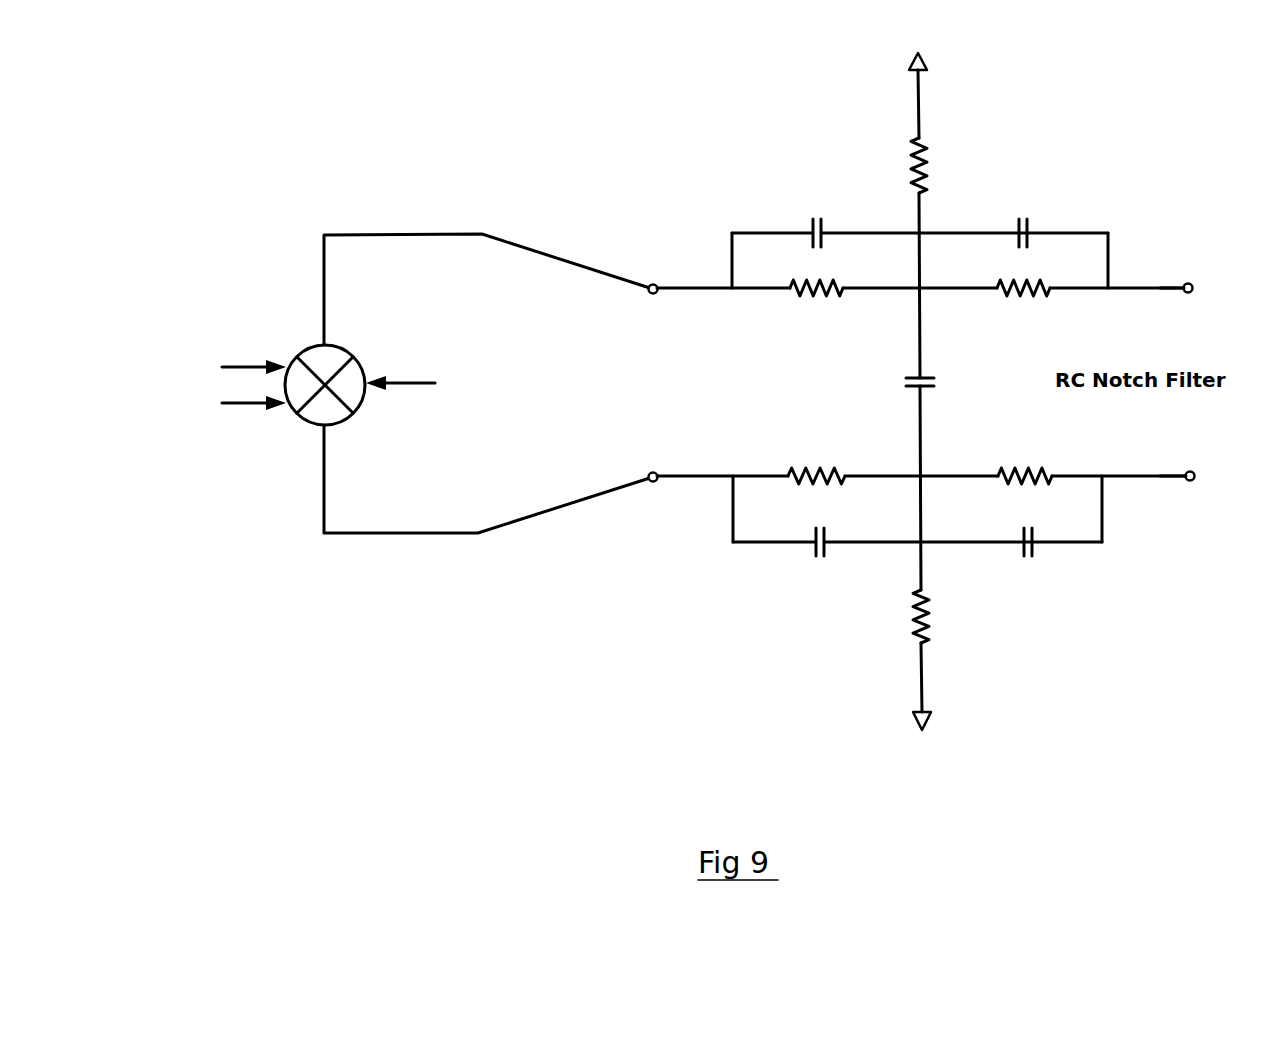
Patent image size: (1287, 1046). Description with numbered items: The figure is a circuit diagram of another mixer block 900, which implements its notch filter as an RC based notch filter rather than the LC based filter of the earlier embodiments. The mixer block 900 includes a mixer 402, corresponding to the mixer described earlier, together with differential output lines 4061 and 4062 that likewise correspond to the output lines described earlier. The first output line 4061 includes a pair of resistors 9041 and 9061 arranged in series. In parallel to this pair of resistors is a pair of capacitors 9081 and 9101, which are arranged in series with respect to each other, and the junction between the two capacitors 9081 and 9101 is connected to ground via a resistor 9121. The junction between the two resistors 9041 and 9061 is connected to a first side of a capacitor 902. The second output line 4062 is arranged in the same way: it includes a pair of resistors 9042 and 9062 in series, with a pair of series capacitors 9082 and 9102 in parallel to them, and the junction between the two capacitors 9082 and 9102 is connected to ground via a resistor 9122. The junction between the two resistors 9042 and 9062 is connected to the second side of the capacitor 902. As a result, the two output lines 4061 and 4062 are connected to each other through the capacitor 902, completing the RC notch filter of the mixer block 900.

The mixer block 900 is at (287, 130).
The mixer 402 is at (325, 359).
The capacitor 902 is at (883, 380).
The resistor 9041 is at (773, 309).
The resistor 9042 is at (786, 444).
The resistor 9061 is at (1069, 312).
The resistor 9062 is at (1075, 455).
The capacitor 9081 is at (781, 199).
The capacitor 9082 is at (790, 579).
The capacitor 9101 is at (1050, 200).
The capacitor 9102 is at (1065, 572).
The resistor 9121 is at (886, 144).
The resistor 9122 is at (887, 637).
The first output line 4061 is at (1187, 253).
The second output line 4062 is at (1156, 512).